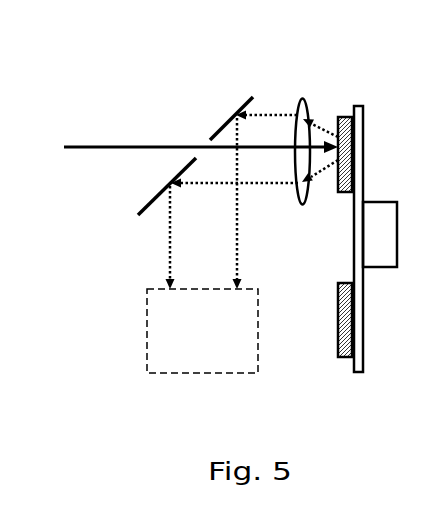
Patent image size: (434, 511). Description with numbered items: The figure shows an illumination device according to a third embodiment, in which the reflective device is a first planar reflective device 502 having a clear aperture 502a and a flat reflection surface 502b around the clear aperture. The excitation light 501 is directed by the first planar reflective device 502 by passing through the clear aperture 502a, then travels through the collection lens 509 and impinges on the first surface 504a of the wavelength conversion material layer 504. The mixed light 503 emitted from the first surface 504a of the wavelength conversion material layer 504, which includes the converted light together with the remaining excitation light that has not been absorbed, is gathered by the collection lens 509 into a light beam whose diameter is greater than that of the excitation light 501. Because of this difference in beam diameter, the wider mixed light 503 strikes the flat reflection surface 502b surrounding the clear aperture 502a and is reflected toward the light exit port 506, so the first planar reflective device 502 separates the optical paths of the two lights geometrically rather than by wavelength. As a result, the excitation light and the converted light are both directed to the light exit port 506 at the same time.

The excitation light 501 is at (173, 146).
The first planar reflective device 502 is at (150, 118).
The clear aperture 502a is at (204, 140).
The flat reflection surface 502b is at (152, 200).
The mixed light 503 is at (170, 260).
The wavelength conversion material layer 504 is at (346, 208).
The first surface 504a is at (338, 170).
The light exit port 506 is at (165, 343).
The collection lens 509 is at (297, 100).